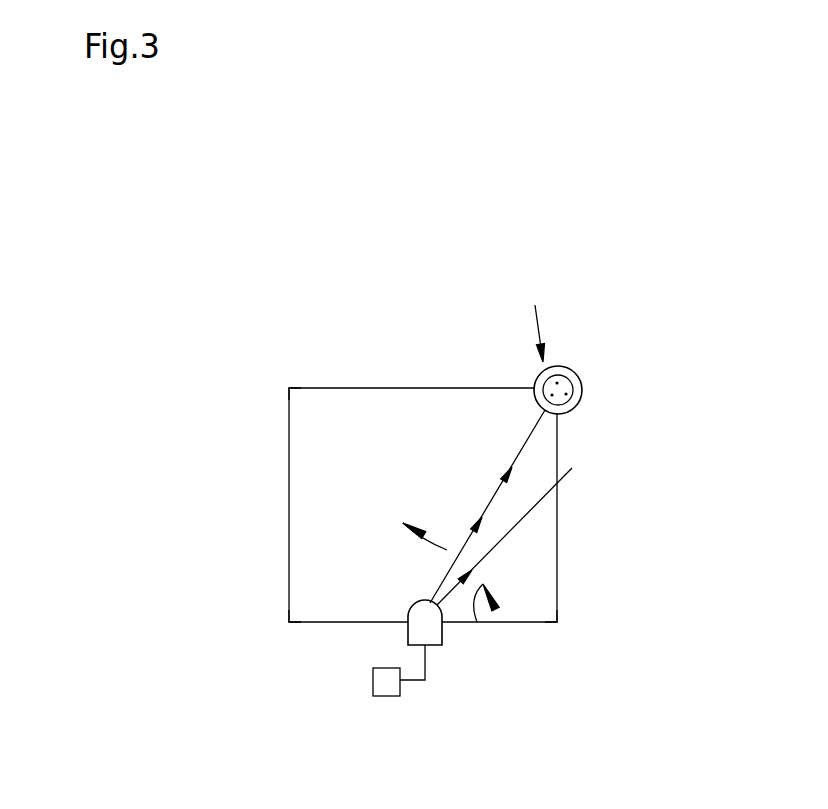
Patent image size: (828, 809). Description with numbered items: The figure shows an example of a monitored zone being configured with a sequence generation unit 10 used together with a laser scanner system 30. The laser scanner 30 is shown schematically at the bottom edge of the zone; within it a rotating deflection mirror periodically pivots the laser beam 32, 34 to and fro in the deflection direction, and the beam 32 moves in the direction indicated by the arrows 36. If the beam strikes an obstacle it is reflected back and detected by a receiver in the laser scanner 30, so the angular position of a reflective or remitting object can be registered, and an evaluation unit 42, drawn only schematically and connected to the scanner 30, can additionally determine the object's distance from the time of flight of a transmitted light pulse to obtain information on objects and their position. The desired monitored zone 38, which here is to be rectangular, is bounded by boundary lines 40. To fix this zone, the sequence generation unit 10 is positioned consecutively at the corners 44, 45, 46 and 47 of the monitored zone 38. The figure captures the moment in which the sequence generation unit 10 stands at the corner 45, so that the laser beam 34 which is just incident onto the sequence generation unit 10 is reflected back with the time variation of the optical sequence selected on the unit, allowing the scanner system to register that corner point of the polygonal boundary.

The sequence generation unit 10 is at (577, 378).
The laser scanner system 30 is at (443, 632).
The laser beam 32 is at (532, 511).
The laser beam 34 is at (523, 447).
The arrows 36 is at (432, 533).
The monitored zone 38 is at (360, 498).
The boundary lines 40 is at (357, 388).
The evaluation unit 42 is at (385, 697).
The corner 44 is at (557, 612).
The corner 45 is at (536, 316).
The corner 46 is at (289, 388).
The corner 47 is at (289, 622).